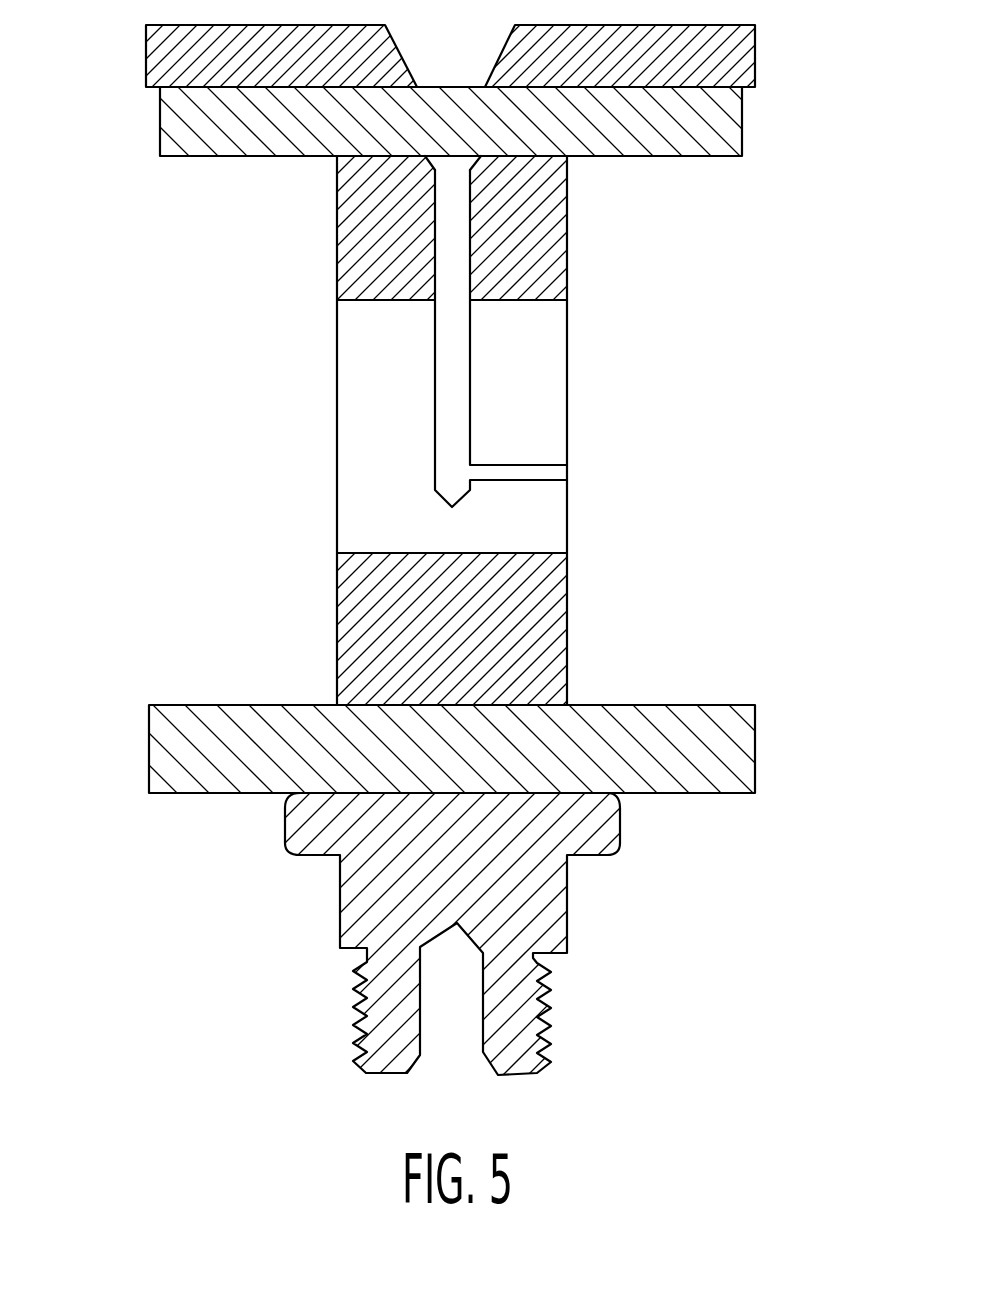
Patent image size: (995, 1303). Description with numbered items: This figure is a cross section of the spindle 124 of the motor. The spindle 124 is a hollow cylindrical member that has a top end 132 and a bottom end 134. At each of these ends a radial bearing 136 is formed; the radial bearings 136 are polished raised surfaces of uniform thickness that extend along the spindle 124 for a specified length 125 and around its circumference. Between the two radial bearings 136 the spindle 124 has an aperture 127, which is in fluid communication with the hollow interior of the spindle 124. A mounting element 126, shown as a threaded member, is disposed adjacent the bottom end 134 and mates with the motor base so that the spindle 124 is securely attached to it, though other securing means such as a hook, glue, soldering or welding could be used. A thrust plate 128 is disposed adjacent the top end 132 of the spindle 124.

The spindle 124 is at (567, 327).
The specified length 125 is at (149, 705).
The mounting element 126 is at (355, 910).
The aperture 127 is at (557, 472).
The thrust plate 128 is at (732, 122).
The top end 132 is at (567, 159).
The bottom end 134 is at (570, 703).
The radial bearings 136 is at (517, 222).